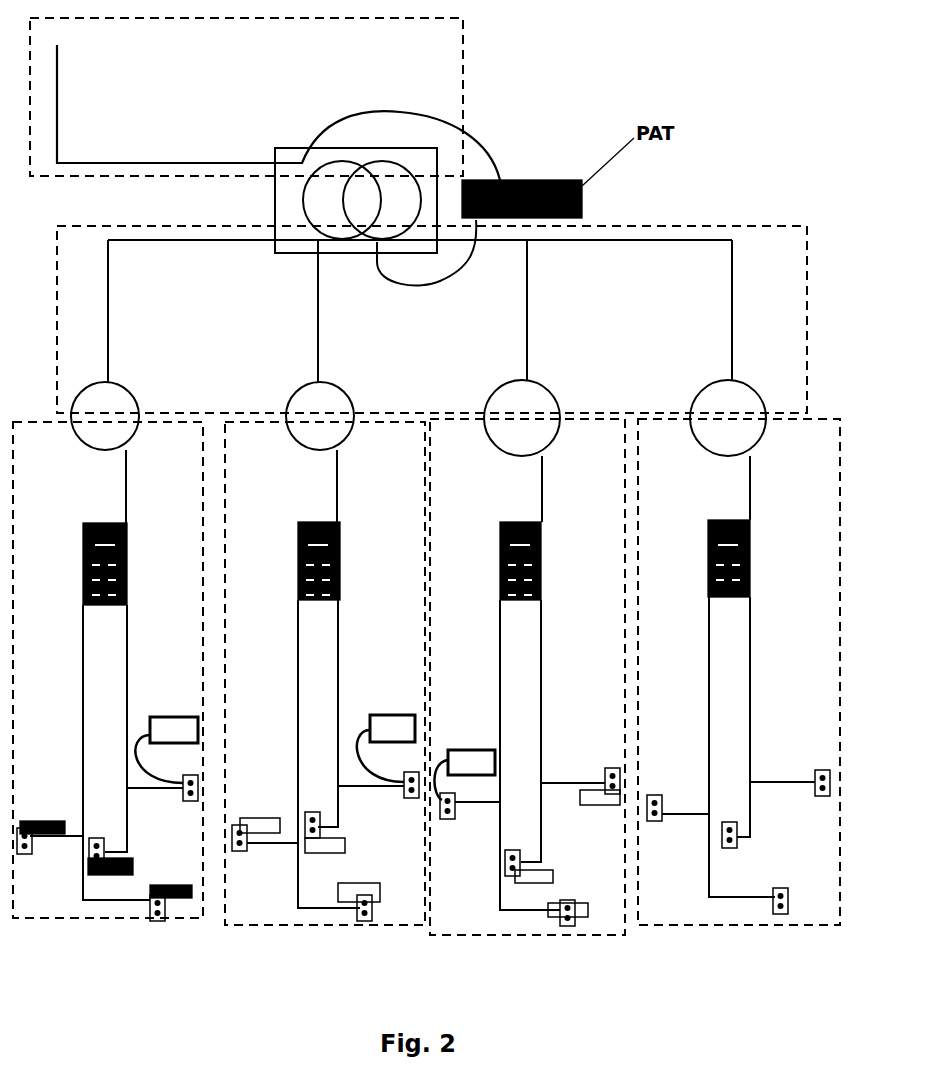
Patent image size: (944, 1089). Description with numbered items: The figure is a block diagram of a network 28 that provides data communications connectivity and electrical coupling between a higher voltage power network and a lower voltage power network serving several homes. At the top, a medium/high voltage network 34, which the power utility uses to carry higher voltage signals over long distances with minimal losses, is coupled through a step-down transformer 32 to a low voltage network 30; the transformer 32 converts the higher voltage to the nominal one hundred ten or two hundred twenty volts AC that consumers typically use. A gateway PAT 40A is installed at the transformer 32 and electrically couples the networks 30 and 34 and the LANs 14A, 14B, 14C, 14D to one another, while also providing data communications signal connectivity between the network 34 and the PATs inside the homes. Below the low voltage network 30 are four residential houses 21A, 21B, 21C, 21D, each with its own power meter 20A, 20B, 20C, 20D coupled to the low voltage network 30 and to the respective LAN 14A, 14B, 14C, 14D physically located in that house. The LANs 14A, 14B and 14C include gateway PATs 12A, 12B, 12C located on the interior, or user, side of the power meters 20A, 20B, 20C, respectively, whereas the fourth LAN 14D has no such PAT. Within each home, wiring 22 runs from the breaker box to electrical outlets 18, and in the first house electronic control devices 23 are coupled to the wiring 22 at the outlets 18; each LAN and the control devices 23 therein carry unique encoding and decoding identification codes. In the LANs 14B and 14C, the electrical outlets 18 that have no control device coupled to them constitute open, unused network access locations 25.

The network 28 is at (602, 37).
The medium/high voltage network 34 is at (464, 86).
The step-down transformer 32 is at (436, 204).
The gateway PAT 40A is at (520, 180).
The low voltage network 30 is at (612, 225).
The power meter 20A is at (138, 400).
The power meter 20B is at (290, 395).
The power meter 20C is at (552, 397).
The power meter 20D is at (697, 390).
The residential house 21A is at (186, 474).
The residential house 21B is at (395, 474).
The residential house 21C is at (588, 478).
The residential house 21D is at (798, 478).
The LAN 14A is at (108, 675).
The LAN 14B is at (325, 679).
The LAN 14C is at (530, 683).
The LAN 14D is at (739, 676).
The gateway PAT 12A is at (150, 718).
The gateway PAT 12B is at (370, 715).
The gateway PAT 12C is at (455, 745).
The wiring 22 is at (83, 738).
The electronic control device 23 is at (62, 820).
The open, unused network access location 25 is at (252, 818).
The electrical outlet 18 is at (26, 856).